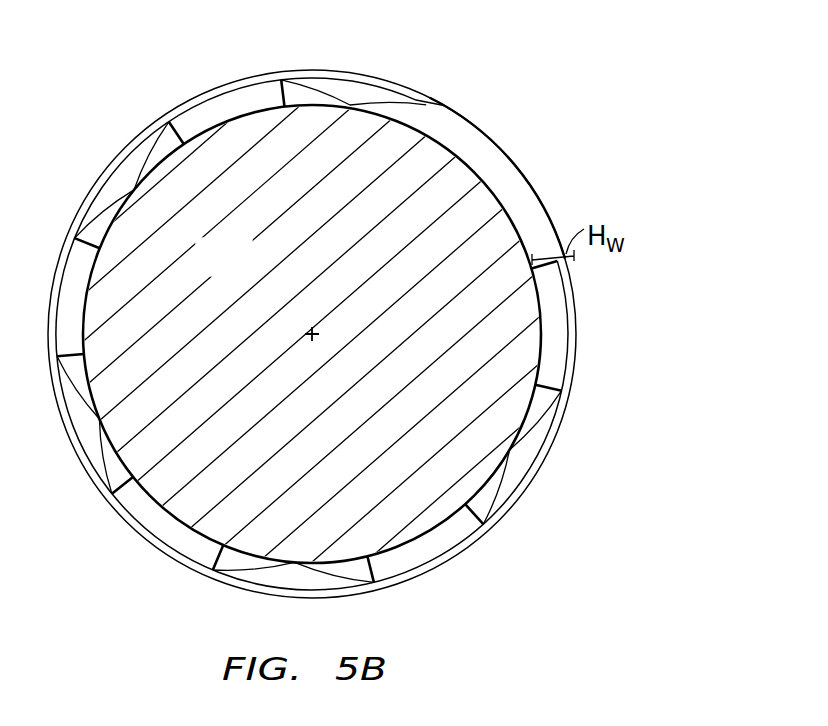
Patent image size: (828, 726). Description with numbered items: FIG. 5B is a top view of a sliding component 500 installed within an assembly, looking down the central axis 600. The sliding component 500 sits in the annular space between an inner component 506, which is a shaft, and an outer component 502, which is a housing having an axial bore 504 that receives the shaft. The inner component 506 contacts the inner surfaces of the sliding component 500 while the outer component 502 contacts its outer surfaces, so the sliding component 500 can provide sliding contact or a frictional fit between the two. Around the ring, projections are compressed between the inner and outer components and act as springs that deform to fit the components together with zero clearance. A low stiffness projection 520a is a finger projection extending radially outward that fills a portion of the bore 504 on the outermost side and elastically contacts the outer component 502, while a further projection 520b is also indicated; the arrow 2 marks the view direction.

The viewing direction arrow 2 is at (631, 83).
The sliding component 500 is at (288, 88).
The outer component 502 is at (458, 121).
The axial bore 504 is at (523, 198).
The inner component 506 is at (246, 271).
The central axis 600 is at (316, 334).
The low stiffness projection 520a is at (545, 356).
The connecting brace 520b is at (502, 482).